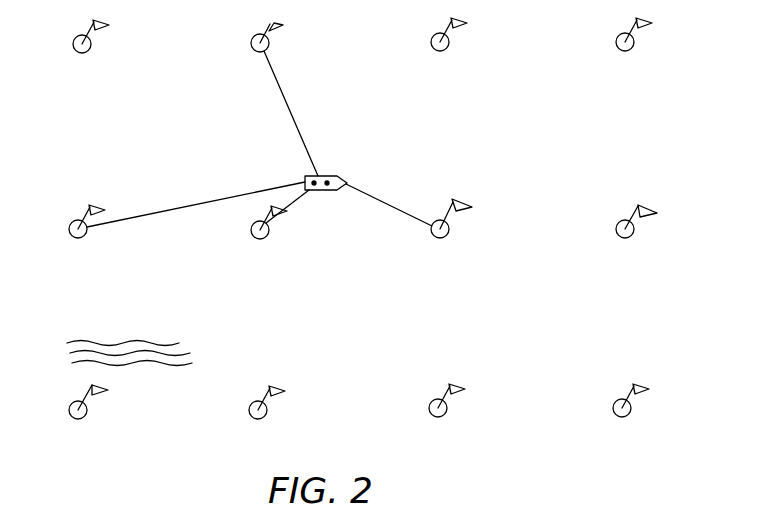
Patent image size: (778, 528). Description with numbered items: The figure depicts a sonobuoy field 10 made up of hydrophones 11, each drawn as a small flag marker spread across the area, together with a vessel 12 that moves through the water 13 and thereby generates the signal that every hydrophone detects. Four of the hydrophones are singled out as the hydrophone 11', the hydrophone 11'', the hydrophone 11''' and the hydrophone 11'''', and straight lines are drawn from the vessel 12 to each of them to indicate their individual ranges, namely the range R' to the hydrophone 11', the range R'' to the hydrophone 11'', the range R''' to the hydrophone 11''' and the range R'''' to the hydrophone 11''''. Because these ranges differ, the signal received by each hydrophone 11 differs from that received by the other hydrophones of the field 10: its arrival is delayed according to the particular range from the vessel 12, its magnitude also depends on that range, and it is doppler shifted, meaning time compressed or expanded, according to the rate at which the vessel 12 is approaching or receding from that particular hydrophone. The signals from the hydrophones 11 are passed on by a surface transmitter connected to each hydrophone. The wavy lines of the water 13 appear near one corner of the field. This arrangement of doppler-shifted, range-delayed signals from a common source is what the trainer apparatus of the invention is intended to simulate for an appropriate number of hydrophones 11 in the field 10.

The sonobuoy field 10 is at (541, 126).
The hydrophones 11 is at (541, 31).
The hydrophone 11' is at (274, 236).
The hydrophone 11'' is at (456, 232).
The hydrophone 11''' is at (280, 30).
The hydrophone 11'''' is at (100, 234).
The vessel 12 is at (341, 174).
The water 13 is at (184, 342).
The range R' is at (294, 209).
The range R'' is at (389, 201).
The range R''' is at (296, 113).
The range R'''' is at (196, 202).